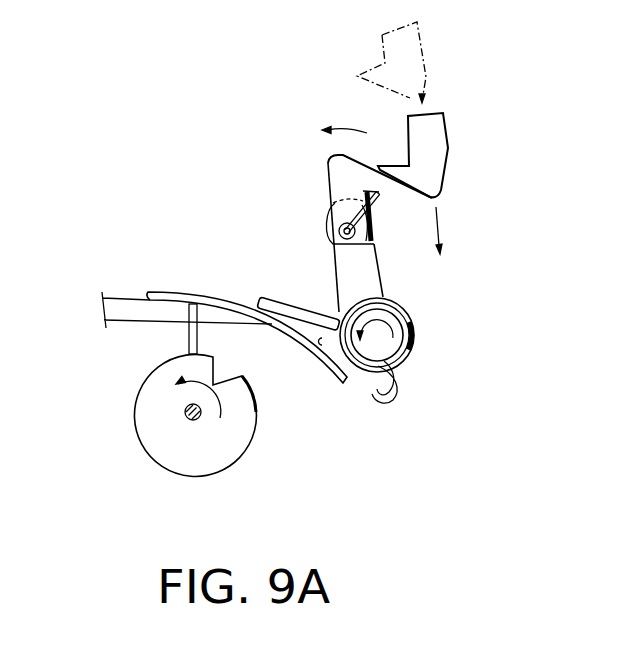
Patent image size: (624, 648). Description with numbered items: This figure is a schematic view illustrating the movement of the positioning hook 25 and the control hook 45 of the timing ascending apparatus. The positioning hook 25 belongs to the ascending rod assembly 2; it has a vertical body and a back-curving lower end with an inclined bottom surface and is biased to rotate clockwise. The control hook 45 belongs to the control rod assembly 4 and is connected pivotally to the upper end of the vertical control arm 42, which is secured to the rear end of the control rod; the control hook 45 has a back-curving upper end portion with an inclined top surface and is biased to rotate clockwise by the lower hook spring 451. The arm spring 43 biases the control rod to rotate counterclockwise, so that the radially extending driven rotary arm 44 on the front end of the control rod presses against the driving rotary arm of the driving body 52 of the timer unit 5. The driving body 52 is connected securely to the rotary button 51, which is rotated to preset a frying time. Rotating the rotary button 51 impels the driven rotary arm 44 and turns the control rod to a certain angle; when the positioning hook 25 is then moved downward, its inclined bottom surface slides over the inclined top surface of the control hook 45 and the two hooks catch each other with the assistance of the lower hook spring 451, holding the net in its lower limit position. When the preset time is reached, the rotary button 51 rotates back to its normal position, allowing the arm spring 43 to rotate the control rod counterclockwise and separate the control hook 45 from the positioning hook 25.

The ascending rod assembly 2 is at (312, 79).
The positioning hook 25 is at (427, 58).
The control hook 45 is at (340, 164).
The lower hook spring 451 is at (348, 213).
The vertical control arm 42 is at (373, 232).
The control rod assembly 4 is at (419, 377).
The arm spring 43 is at (382, 403).
The driven rotary arm 44 is at (293, 303).
The driving body 52 is at (238, 298).
The timer unit 5 is at (123, 430).
The rotary button 51 is at (196, 421).